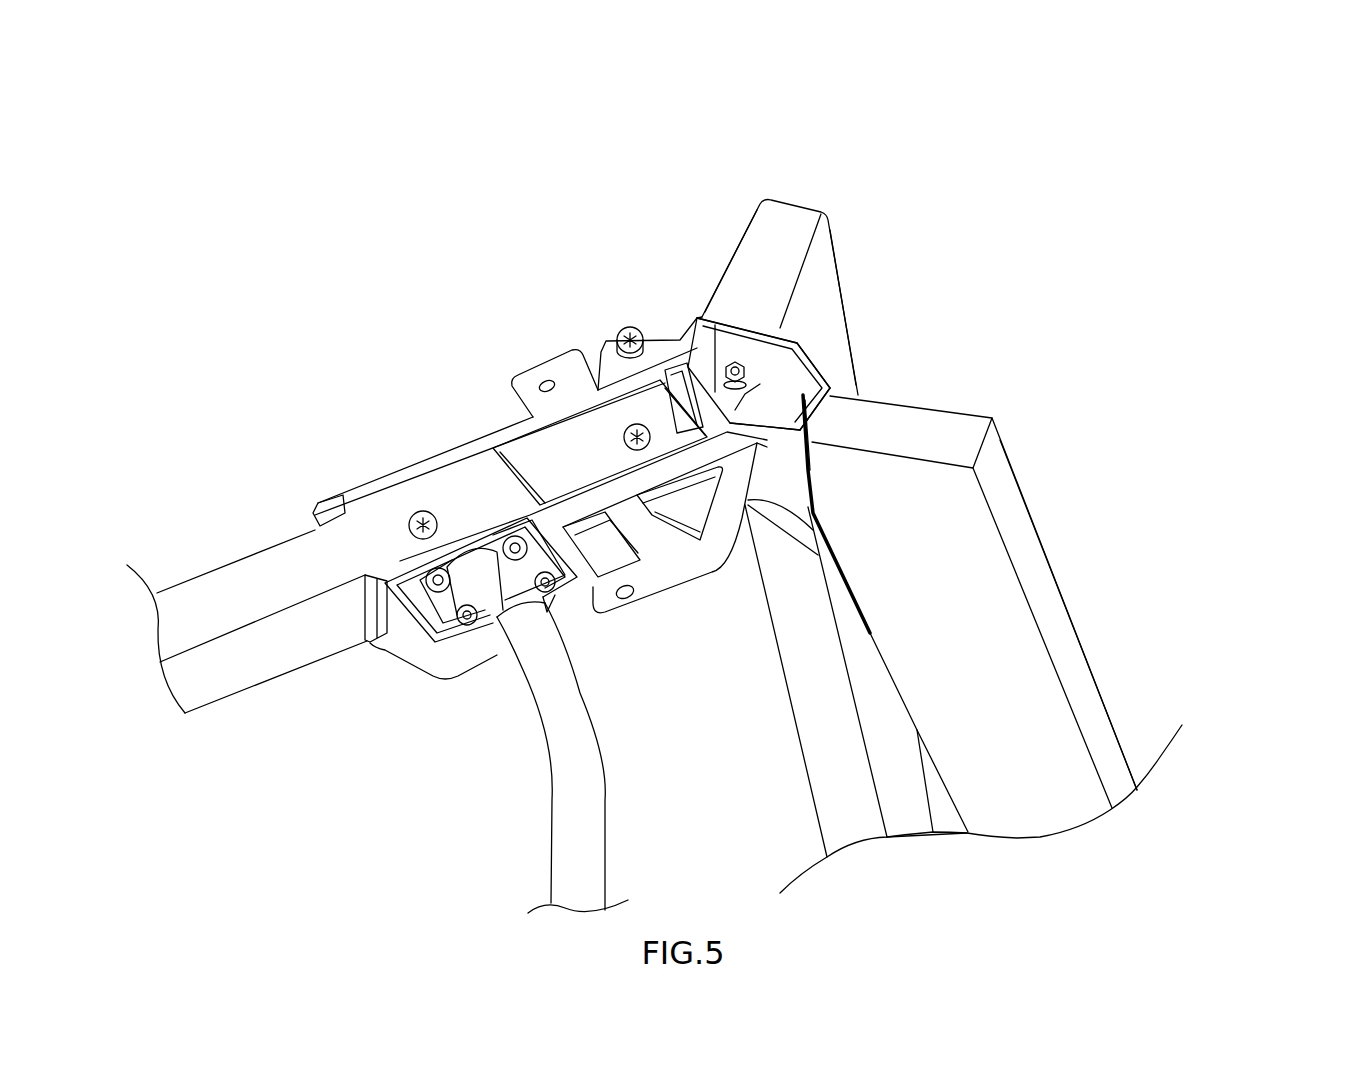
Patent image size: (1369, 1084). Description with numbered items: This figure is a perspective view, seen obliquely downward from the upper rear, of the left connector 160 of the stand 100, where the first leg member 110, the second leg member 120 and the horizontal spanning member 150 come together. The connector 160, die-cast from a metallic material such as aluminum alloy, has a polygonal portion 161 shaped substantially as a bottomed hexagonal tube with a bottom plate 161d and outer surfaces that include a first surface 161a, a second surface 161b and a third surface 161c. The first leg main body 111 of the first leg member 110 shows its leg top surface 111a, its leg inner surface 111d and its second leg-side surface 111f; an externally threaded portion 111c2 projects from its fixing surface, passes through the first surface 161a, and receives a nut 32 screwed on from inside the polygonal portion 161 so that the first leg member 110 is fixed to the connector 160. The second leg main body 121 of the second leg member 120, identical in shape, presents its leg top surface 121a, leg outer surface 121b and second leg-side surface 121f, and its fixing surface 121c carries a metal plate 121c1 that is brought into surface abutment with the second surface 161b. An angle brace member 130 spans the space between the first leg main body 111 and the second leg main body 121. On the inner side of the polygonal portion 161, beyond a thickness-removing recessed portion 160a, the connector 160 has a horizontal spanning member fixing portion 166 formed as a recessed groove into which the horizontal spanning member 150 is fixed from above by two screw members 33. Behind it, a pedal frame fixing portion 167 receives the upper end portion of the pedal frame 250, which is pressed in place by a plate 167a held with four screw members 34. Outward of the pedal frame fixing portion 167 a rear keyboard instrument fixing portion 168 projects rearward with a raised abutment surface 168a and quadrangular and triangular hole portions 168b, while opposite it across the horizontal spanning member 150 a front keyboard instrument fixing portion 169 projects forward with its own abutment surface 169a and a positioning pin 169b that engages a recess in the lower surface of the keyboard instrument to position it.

The stand 100 is at (343, 248).
The first leg member 110 is at (841, 277).
The first leg main body 111 is at (808, 228).
The leg top surface 111a is at (780, 243).
The externally threaded portion 111c2 is at (715, 322).
The leg inner surface 111d is at (830, 762).
The second leg-side surface 111f is at (823, 270).
The second leg member 120 is at (1098, 722).
The second leg main body 121 is at (1100, 689).
The leg top surface 121a is at (939, 433).
The leg outer surface 121b is at (1067, 662).
The metal plate 121c1 is at (808, 472).
The fixing surface 121c is at (807, 435).
The second leg-side surface 121f is at (1031, 793).
The angle brace member 130 is at (770, 382).
The horizontal spanning member 150 is at (215, 602).
The connector 160 is at (460, 437).
The thickness-removing recessed portion 160a is at (692, 393).
The polygonal portion 161 is at (803, 345).
The first surface 161a is at (754, 322).
The second surface 161b is at (832, 411).
The third surface 161c is at (812, 338).
The bottom plate 161d is at (768, 419).
The horizontal spanning member fixing portion 166 is at (340, 515).
The pedal frame fixing portion 167 is at (414, 646).
The plate 167a is at (448, 595).
The rear keyboard instrument fixing portion 168 is at (590, 590).
The abutment surface 168a is at (660, 575).
The bracket hole 168b is at (624, 598).
The front keyboard instrument fixing portion 169 is at (597, 363).
The abutment surface 169a is at (540, 375).
The positioning pin 169b is at (622, 328).
The pedal frame 250 is at (575, 857).
The nut 32 is at (737, 357).
The screw members 33 is at (627, 425).
The screw members 34 is at (464, 620).